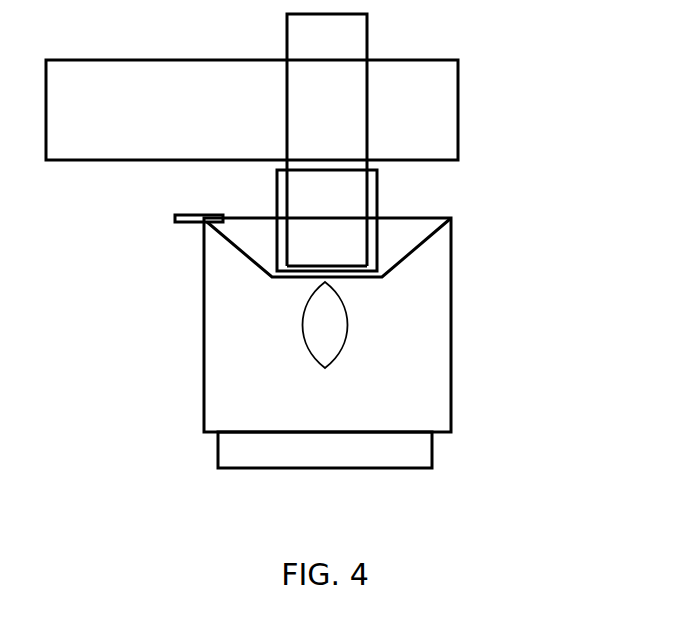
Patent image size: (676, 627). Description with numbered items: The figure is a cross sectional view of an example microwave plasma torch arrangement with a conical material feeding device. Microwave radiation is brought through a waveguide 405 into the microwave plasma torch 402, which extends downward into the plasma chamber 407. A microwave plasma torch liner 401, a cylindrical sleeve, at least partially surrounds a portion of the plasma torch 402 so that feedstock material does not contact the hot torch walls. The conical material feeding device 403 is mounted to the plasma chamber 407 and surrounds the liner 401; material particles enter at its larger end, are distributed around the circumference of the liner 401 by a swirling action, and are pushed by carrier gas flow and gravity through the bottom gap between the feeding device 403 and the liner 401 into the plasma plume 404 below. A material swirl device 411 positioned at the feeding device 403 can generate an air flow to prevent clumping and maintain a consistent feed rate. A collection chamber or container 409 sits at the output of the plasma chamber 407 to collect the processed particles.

The microwave plasma torch liner 401 is at (377, 183).
The microwave plasma torch 402 is at (301, 112).
The conical material feeding device 403 is at (413, 248).
The plasma plume 404 is at (350, 332).
The waveguide 405 is at (136, 117).
The plasma chamber 407 is at (231, 407).
The collection chamber or container 409 is at (422, 452).
The material swirl device 411 is at (175, 218).